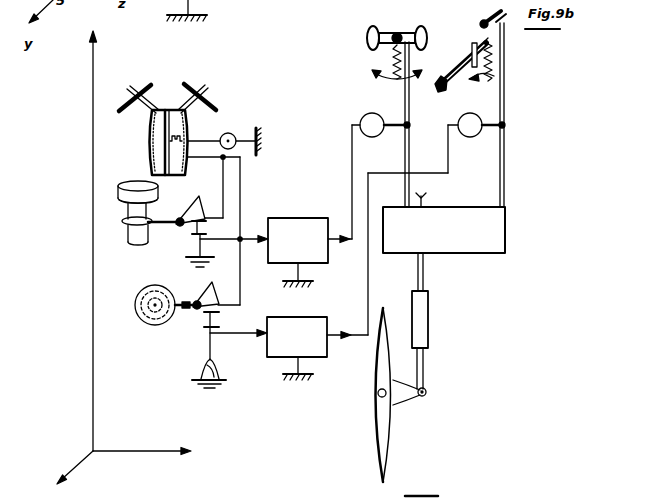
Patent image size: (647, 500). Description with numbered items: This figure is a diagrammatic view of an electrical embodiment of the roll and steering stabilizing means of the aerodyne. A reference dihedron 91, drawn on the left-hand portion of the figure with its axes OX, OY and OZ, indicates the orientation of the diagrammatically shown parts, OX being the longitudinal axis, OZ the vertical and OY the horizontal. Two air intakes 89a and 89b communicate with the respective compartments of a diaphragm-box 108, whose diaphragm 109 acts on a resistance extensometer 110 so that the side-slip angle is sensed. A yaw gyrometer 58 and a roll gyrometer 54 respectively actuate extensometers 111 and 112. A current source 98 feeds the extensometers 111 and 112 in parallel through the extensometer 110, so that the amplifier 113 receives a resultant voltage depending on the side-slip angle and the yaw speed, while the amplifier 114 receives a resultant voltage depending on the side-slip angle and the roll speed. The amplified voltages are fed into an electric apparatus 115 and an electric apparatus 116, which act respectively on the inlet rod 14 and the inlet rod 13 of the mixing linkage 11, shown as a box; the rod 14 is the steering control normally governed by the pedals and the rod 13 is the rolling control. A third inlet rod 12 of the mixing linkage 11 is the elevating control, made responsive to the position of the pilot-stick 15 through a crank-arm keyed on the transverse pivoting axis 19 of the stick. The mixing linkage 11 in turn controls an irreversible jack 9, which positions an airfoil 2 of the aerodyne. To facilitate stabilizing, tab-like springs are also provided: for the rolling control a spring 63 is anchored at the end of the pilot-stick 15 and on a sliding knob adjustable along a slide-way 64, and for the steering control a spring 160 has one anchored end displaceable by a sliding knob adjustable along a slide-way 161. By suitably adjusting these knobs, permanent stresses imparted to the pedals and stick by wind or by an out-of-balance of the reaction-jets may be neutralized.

The rudder 2 is at (391, 447).
The irreversible jack 9 is at (428, 323).
The mixing linkage 11 is at (500, 231).
The inlet rod 12 is at (424, 199).
The inlet rod 13 is at (507, 182).
The inlet rod 14 is at (404, 195).
The pilot-stick 15 is at (460, 82).
The transverse pivoting axis 19 is at (483, 27).
The roll gyrometer 54 is at (143, 291).
The yaw gyrometer 58 is at (120, 238).
The spring 63 is at (505, 58).
The slide-way 64 is at (493, 84).
The air intake 89a is at (208, 87).
The air intake 89b is at (128, 92).
The reference dihedron 91 is at (93, 392).
The current source 98 is at (233, 134).
The diaphragm-box 108 is at (150, 158).
The diaphragm 109 is at (164, 130).
The resistance extensometer 110 is at (179, 136).
The extensometer 111 is at (194, 236).
The extensometer 112 is at (203, 333).
The amplifier 113 is at (300, 229).
The amplifier 114 is at (300, 328).
The electric apparatus 115 is at (366, 141).
The electric apparatus 116 is at (463, 141).
The spring 160 is at (393, 61).
The slide-way 161 is at (396, 80).